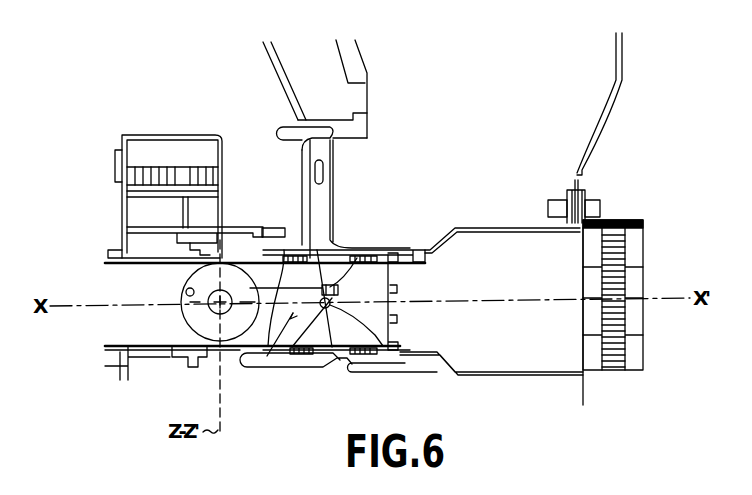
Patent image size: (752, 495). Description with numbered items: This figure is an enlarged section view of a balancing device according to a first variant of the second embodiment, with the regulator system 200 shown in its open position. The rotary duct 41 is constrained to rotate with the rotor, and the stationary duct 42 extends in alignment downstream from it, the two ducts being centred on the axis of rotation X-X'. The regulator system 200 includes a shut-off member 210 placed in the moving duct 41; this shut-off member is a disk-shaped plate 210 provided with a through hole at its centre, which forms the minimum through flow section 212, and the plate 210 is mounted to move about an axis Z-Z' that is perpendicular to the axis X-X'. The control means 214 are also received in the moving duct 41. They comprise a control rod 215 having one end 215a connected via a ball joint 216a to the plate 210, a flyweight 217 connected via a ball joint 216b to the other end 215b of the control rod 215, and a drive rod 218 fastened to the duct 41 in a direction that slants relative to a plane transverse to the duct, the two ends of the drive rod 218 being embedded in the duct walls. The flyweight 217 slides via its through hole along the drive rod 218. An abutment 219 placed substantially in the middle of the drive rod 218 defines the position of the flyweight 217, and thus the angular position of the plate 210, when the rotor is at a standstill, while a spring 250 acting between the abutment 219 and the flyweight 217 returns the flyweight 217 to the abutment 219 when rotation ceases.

The rotary duct 41 is at (106, 293).
The stationary duct 42 is at (500, 279).
The regulator system 200 is at (342, 220).
The shut-off member 210 is at (195, 312).
The minimum through flow section 212 is at (188, 348).
The control means 214 is at (267, 356).
The control rod 215 is at (284, 250).
The end of control rod 215a is at (200, 275).
The other end of control rod 215b is at (318, 352).
The ball joint 216a is at (186, 292).
The ball joint 216b is at (318, 257).
The flyweight 217 is at (338, 288).
The drive rod 218 is at (363, 250).
The abutment 219 is at (383, 358).
The spring 250 is at (335, 303).